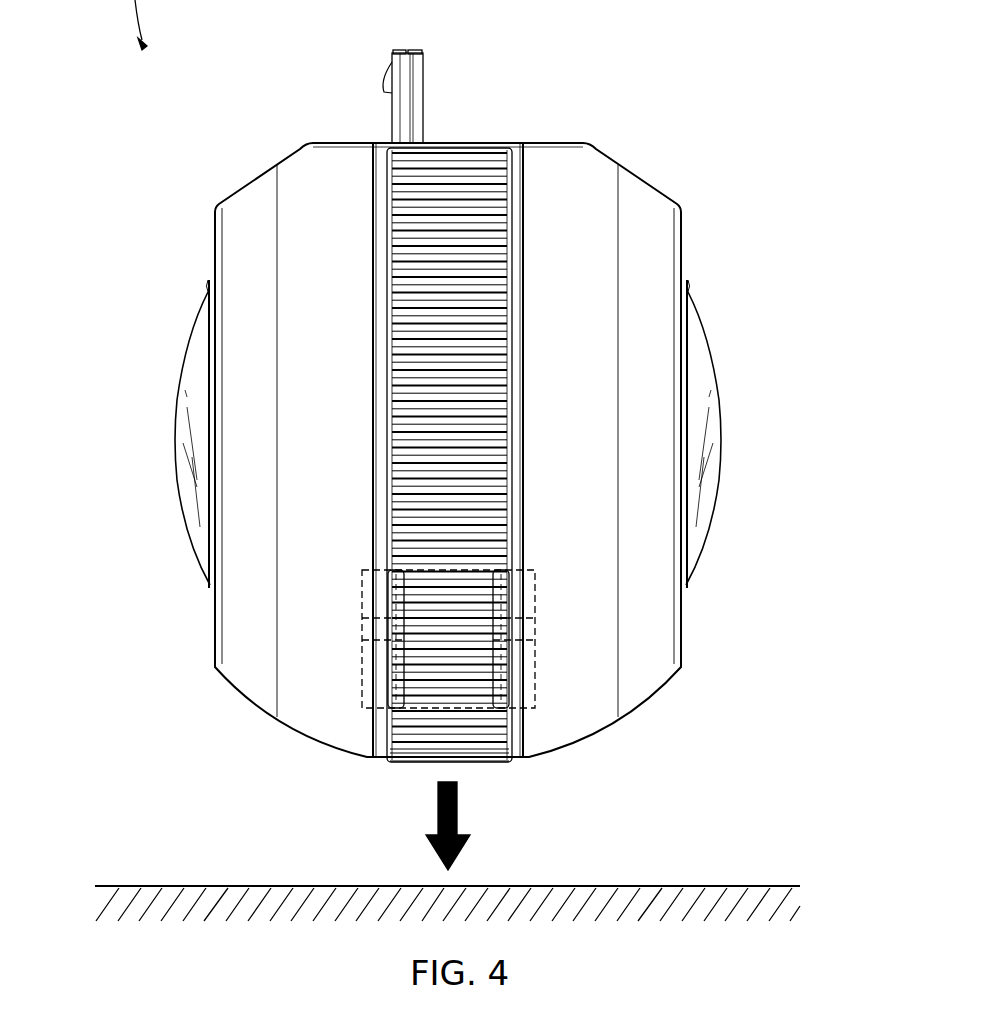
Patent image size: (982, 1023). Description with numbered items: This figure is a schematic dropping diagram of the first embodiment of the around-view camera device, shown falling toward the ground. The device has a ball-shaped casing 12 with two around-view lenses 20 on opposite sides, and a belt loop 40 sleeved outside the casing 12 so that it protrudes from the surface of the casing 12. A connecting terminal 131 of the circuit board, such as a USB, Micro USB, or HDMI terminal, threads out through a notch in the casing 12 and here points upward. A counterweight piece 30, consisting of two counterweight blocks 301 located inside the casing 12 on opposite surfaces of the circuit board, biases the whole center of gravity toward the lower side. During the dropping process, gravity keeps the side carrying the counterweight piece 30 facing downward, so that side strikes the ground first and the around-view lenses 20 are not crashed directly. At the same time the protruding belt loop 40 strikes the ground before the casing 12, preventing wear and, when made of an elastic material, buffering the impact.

The casing 12 is at (562, 172).
The around-view lenses 20 is at (196, 540).
The belt loop 40 is at (475, 180).
The connecting terminal 131 is at (402, 60).
The counterweight piece 30 is at (598, 639).
The counterweight blocks 301 is at (510, 620).